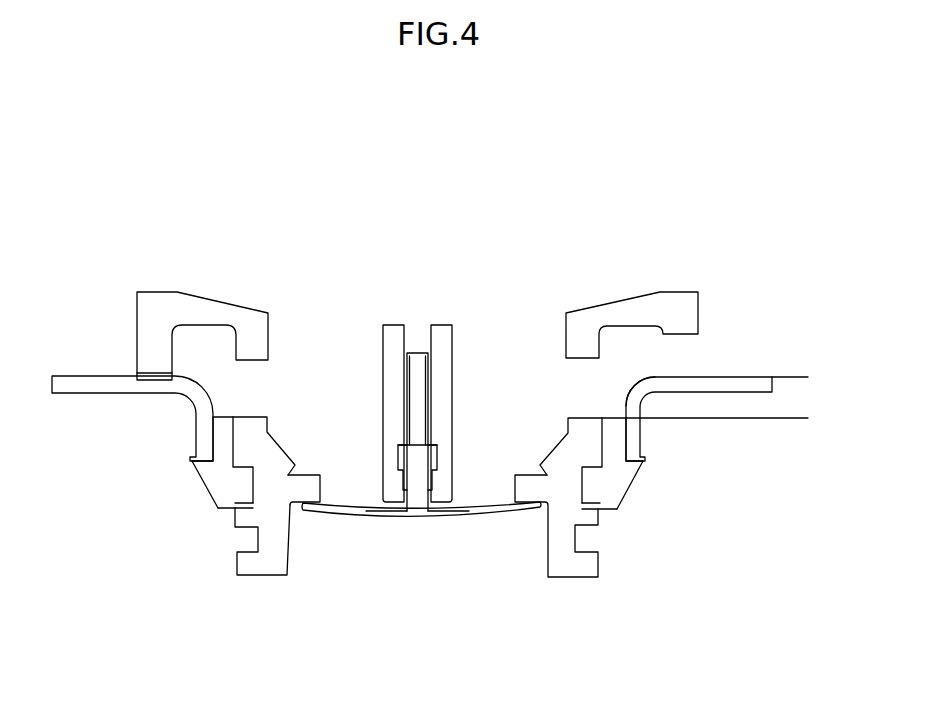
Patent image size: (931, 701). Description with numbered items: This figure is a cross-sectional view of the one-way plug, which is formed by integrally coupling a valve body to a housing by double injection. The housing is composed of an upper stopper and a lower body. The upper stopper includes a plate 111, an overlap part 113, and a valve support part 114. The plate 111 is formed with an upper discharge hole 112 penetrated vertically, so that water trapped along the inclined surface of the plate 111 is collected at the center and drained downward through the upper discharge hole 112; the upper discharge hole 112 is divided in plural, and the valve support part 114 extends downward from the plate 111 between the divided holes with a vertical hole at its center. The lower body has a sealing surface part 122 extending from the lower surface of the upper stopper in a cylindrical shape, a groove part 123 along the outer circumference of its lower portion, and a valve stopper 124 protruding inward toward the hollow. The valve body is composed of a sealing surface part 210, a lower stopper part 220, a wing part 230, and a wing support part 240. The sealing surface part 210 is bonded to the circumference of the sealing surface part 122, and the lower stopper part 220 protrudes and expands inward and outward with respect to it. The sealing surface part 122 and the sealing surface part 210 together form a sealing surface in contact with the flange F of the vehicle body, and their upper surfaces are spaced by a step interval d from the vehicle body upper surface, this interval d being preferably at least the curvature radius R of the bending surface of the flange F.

The plate 111 is at (202, 312).
The upper discharge hole 112 is at (527, 334).
The overlap part 113 is at (152, 372).
The valve support part 114 is at (387, 360).
The sealing surface part 122 is at (247, 440).
The groove part 123 is at (253, 483).
The valve stopper 124 is at (320, 486).
The sealing surface part 210 is at (613, 487).
The lower stopper part 220 is at (613, 442).
The wing part 230 is at (482, 517).
The wing support part 240 is at (420, 410).
The flange F is at (633, 430).
The curvature radius R is at (625, 388).
The step interval d is at (800, 377).